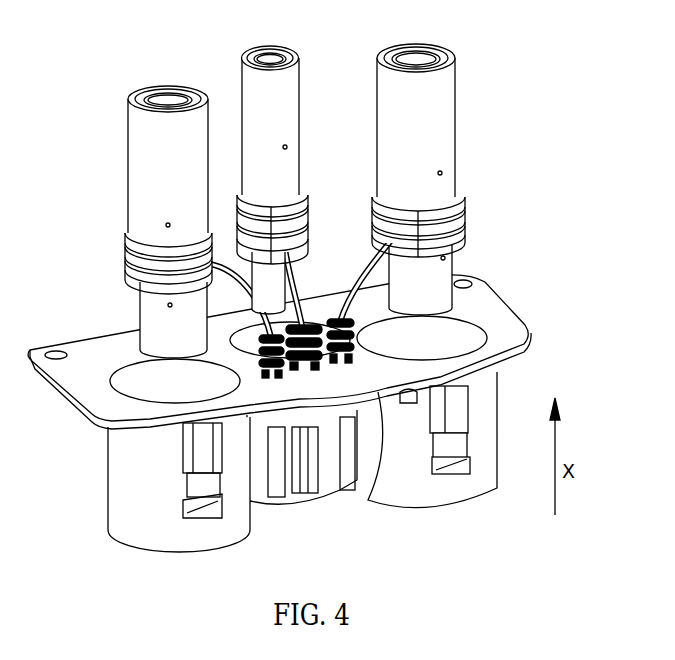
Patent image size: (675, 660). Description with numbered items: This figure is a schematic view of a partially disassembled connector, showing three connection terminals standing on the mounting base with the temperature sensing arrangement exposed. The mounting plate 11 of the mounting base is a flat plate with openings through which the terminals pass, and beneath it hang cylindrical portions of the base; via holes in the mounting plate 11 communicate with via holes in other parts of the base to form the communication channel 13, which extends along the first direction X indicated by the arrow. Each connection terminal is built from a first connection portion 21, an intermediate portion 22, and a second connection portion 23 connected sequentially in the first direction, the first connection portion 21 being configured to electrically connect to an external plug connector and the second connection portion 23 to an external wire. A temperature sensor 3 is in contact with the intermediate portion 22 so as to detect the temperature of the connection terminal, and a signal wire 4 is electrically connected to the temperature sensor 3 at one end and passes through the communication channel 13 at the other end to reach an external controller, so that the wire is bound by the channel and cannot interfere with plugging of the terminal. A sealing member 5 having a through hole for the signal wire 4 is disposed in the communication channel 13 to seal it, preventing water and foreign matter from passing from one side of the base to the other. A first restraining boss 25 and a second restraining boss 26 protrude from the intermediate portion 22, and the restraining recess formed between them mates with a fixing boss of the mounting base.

The mounting plate 11 is at (108, 423).
The communication channel 13 is at (304, 372).
The sealing member 5 is at (377, 487).
The temperature sensor 3 is at (294, 200).
The signal wire 4 is at (302, 257).
The first connection portion 21 is at (150, 173).
The intermediate portion 22 is at (130, 277).
The second connection portion 23 is at (152, 318).
The first restraining boss 25 is at (466, 195).
The second restraining boss 26 is at (462, 251).